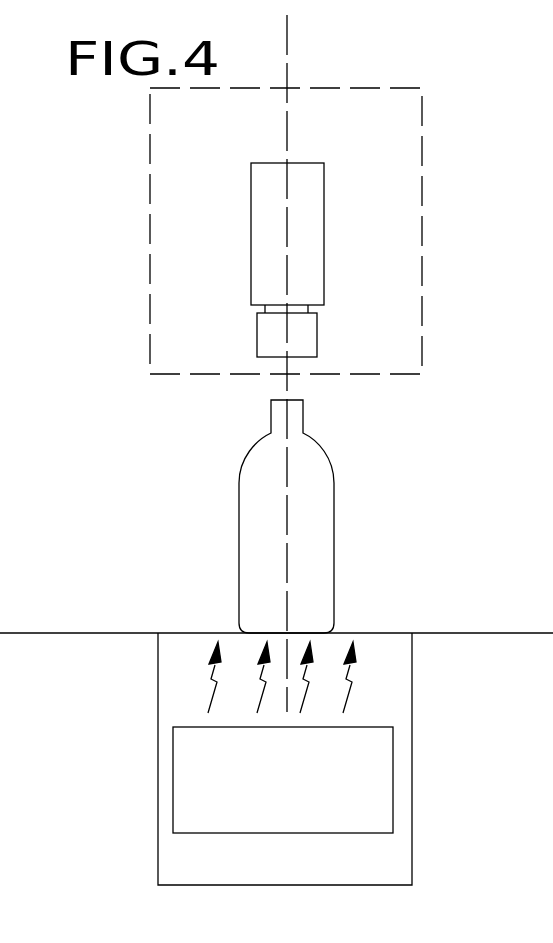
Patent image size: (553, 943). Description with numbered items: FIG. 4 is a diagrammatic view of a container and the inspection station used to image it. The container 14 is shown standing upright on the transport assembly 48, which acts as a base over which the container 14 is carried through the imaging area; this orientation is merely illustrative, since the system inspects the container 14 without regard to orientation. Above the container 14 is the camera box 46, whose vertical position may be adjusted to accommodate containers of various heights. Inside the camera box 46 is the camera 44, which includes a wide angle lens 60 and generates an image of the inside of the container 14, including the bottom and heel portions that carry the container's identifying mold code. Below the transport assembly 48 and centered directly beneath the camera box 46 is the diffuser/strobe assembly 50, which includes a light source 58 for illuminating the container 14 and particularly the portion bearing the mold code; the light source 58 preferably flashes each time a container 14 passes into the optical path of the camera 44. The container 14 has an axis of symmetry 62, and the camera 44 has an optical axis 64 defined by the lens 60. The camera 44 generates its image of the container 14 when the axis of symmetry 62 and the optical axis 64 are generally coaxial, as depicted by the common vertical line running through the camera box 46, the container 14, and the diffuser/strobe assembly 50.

The container 14 is at (334, 490).
The camera 44 is at (324, 275).
The camera box 46 is at (422, 221).
The transport assembly 48 is at (370, 633).
The diffuser/strobe assembly 50 is at (412, 762).
The light source 58 is at (280, 833).
The wide angle lens 60 is at (317, 335).
The axis of symmetry 62 is at (286, 549).
The optical axis 64 is at (287, 118).